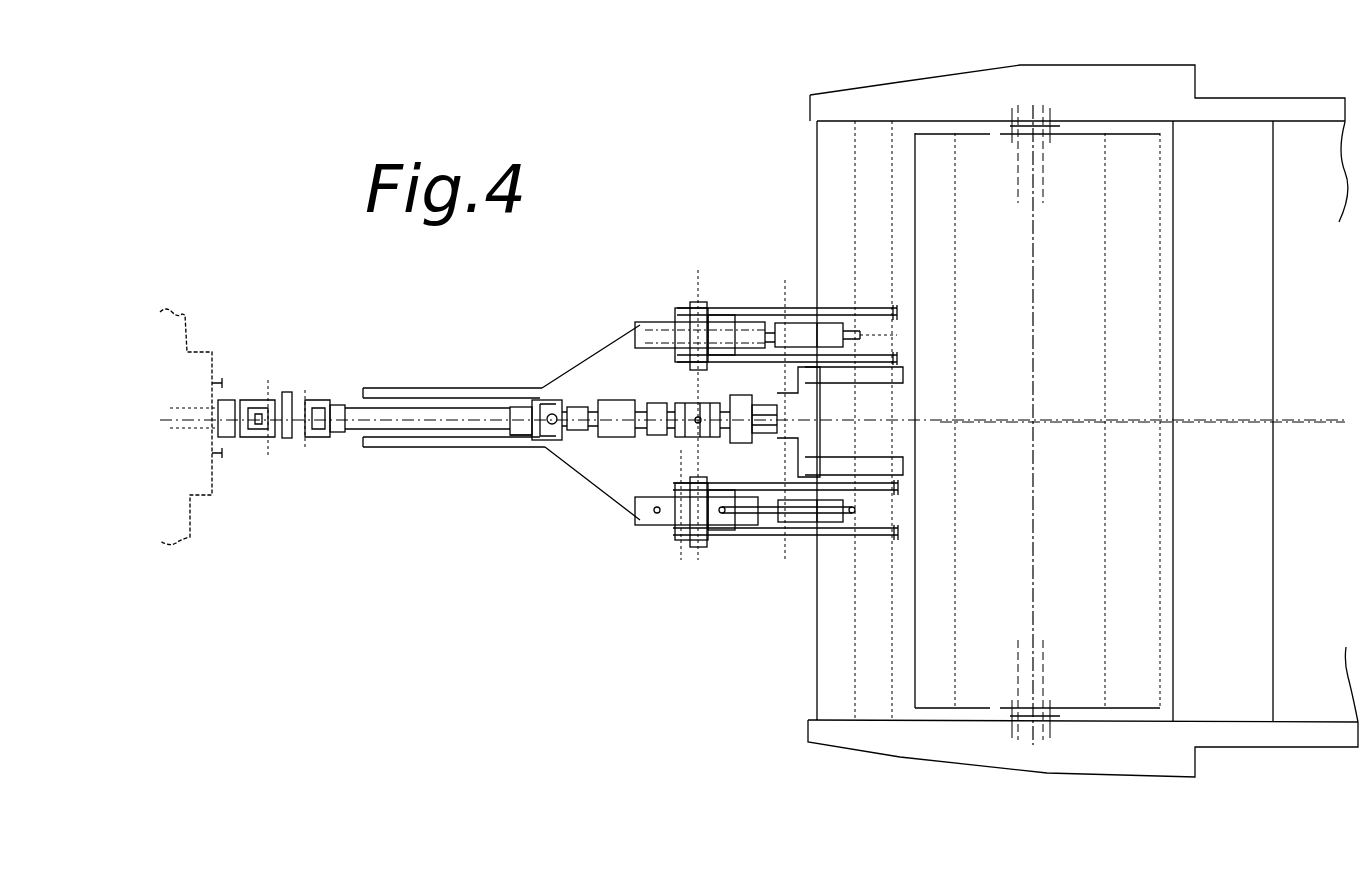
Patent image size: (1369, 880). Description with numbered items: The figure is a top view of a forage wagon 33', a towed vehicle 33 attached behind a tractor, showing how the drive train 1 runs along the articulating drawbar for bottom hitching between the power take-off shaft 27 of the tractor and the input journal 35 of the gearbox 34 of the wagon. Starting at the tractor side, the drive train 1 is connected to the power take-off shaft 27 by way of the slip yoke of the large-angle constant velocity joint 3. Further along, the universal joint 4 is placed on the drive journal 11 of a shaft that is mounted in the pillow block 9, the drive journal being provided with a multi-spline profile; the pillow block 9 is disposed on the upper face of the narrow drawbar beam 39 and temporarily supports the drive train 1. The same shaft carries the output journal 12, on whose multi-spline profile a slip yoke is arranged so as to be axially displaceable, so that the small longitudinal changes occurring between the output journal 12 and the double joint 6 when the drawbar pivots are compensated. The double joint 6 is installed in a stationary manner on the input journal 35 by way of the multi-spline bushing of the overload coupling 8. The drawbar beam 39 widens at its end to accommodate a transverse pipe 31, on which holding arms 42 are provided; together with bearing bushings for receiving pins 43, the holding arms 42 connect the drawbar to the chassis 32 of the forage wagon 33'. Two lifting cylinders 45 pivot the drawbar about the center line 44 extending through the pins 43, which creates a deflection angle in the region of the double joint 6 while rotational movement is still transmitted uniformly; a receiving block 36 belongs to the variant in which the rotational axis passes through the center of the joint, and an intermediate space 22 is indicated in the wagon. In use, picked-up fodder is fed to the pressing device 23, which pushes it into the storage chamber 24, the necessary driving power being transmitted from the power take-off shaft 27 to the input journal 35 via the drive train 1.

The drive train 1 is at (447, 405).
The large-angle constant velocity joint 3 is at (286, 440).
The universal joint 4 is at (548, 405).
The double joint 6 is at (655, 373).
The overload coupling 8 is at (740, 395).
The pillow block 9 is at (590, 437).
The drive journal 11 is at (593, 437).
The output journal 12 is at (612, 445).
The intermediate space 22 is at (762, 477).
The pressing device 23 is at (971, 711).
The storage chamber 24 is at (1322, 661).
The power take-off shaft 27 is at (188, 418).
The transverse pipe 31 is at (808, 690).
The chassis 32 is at (980, 72).
The towed vehicle 33 is at (970, 401).
The forage wagon 33' is at (913, 410).
The gearbox 34 is at (790, 410).
The input journal 35 is at (893, 400).
The receiving block 36 is at (803, 537).
The drawbar beam 39 is at (385, 437).
The holding arms 42 is at (655, 527).
The pin 43 is at (690, 303).
The center line 44 is at (697, 272).
The lifting cylinder 45 is at (783, 523).